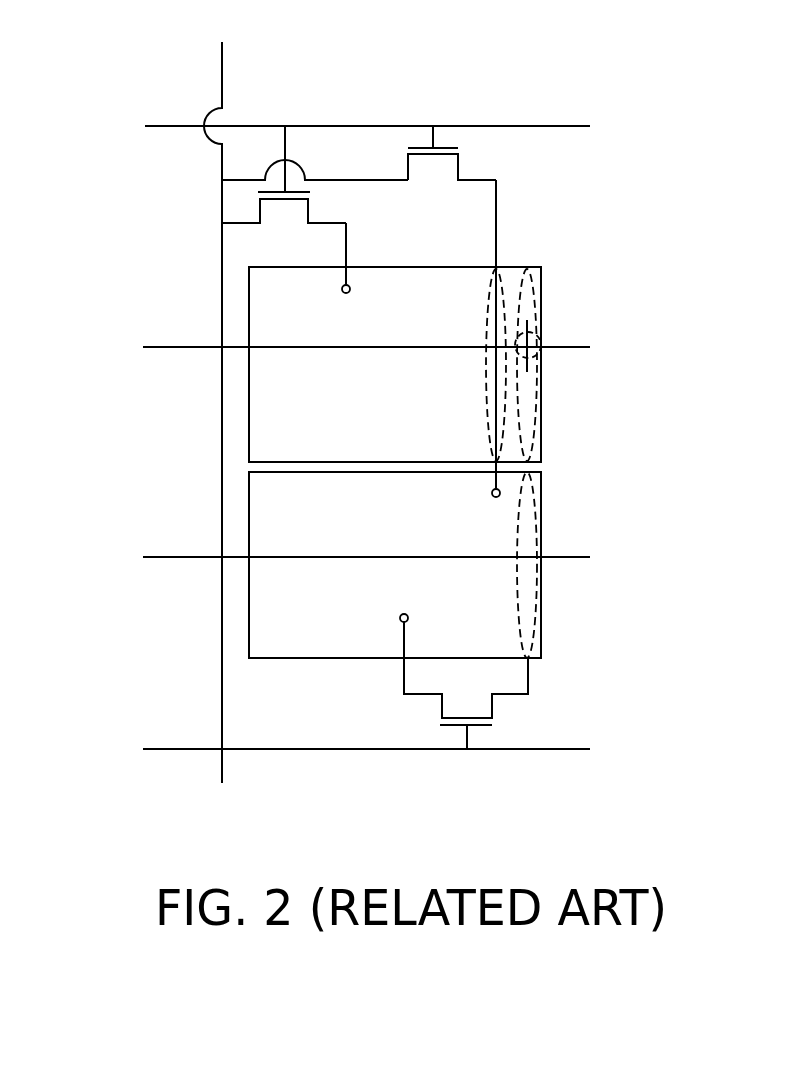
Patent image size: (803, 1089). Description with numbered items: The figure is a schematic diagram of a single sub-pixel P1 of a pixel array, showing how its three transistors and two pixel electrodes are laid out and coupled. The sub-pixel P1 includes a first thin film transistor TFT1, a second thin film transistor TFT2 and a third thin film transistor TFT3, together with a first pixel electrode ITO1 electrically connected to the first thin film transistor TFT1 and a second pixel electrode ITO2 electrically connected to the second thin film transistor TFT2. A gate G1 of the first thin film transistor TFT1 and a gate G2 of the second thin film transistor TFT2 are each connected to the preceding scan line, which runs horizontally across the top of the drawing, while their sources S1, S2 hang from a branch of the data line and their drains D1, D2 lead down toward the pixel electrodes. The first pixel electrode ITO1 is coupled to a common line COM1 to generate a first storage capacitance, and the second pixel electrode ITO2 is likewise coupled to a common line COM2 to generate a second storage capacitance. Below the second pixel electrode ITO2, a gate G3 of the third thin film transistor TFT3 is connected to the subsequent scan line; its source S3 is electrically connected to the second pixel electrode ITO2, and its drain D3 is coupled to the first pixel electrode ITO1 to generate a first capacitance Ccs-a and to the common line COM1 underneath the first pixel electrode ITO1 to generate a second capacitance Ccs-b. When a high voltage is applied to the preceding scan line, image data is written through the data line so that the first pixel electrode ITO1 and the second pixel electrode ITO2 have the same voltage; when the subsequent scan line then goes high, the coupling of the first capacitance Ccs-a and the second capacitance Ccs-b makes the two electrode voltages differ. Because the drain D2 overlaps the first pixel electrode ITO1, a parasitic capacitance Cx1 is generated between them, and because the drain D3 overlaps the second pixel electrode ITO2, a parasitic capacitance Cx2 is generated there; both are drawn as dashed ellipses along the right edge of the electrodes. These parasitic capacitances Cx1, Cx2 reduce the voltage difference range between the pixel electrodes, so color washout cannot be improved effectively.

The common line COM1 is at (342, 348).
The common line COM2 is at (342, 558).
The first pixel electrode ITO1 is at (306, 395).
The second pixel electrode ITO2 is at (306, 595).
The first thin film transistor TFT1 is at (284, 189).
The second thin film transistor TFT2 is at (452, 168).
The third thin film transistor TFT3 is at (464, 681).
The gate G1 is at (267, 126).
The source S1 is at (242, 223).
The drain D1 is at (347, 237).
The gate G2 is at (436, 126).
The source S2 is at (350, 180).
The drain D2 is at (496, 209).
The gate G3 is at (468, 735).
The source S3 is at (403, 680).
The drain D3 is at (528, 680).
The parasitic capacitance Cx1 is at (479, 365).
The parasitic capacitance Cx2 is at (510, 565).
The first capacitance Ccs-a is at (536, 435).
The second capacitance Ccs-b is at (542, 323).
The sub-pixel P1 is at (603, 417).